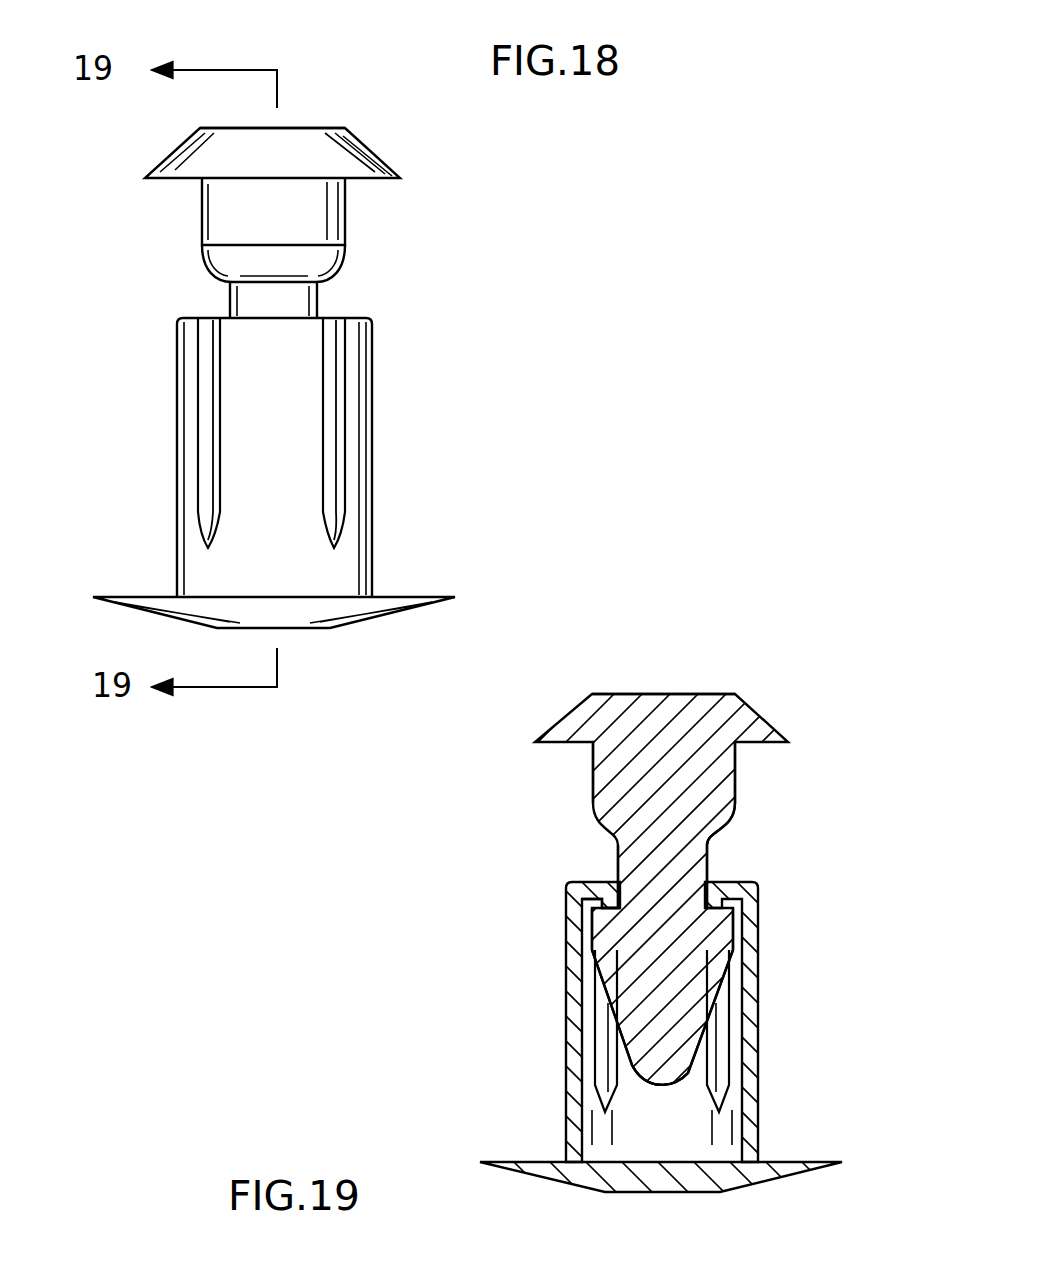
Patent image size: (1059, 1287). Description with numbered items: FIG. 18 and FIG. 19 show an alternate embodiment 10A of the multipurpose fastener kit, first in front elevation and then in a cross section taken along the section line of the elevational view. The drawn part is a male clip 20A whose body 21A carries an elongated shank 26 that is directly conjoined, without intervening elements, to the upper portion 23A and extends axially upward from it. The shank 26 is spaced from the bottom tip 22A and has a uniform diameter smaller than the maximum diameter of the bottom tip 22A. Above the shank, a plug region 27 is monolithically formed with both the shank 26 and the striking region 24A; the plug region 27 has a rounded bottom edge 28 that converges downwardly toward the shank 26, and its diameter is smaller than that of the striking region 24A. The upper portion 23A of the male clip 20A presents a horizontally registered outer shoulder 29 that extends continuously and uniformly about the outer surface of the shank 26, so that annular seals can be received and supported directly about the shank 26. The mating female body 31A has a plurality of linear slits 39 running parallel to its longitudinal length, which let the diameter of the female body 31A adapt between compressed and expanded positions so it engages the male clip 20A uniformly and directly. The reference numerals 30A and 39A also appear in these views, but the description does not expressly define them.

In FIG. 18, the alternate embodiment of the multipurpose fastener kit 10A is at (444, 200).
In FIG. 19, the alternate embodiment of the multipurpose fastener kit 10A is at (718, 660).
In FIG. 18, the male clip 20A is at (352, 117).
In FIG. 19, the male clip 20A is at (744, 695).
In FIG. 18, the striking region 24A is at (303, 128).
In FIG. 19, the striking region 24A is at (658, 694).
In FIG. 18, the plug region 27 is at (213, 191).
In FIG. 19, the plug region 27 is at (613, 767).
In FIG. 18, the rounded bottom edge 28 is at (205, 260).
In FIG. 19, the rounded bottom edge 28 is at (732, 830).
In FIG. 18, the elongated shank 26 is at (305, 300).
In FIG. 19, the elongated shank 26 is at (635, 870).
In FIG. 19, the body of the male clip 21A is at (703, 960).
In FIG. 19, the upper portion 23A is at (607, 920).
In FIG. 19, the outer shoulder 29 is at (733, 900).
In FIG. 18, the sleeve member 30A is at (162, 501).
In FIG. 19, the sleeve member 30A is at (552, 1148).
In FIG. 18, the female body 31A is at (350, 580).
In FIG. 19, the female body 31A is at (752, 1152).
In FIG. 18, the linear slits 39 is at (208, 470).
In FIG. 19, the longitudinal slot in sleeve (section) 39A is at (600, 1093).
In FIG. 19, the bottom tip 22A is at (658, 1092).